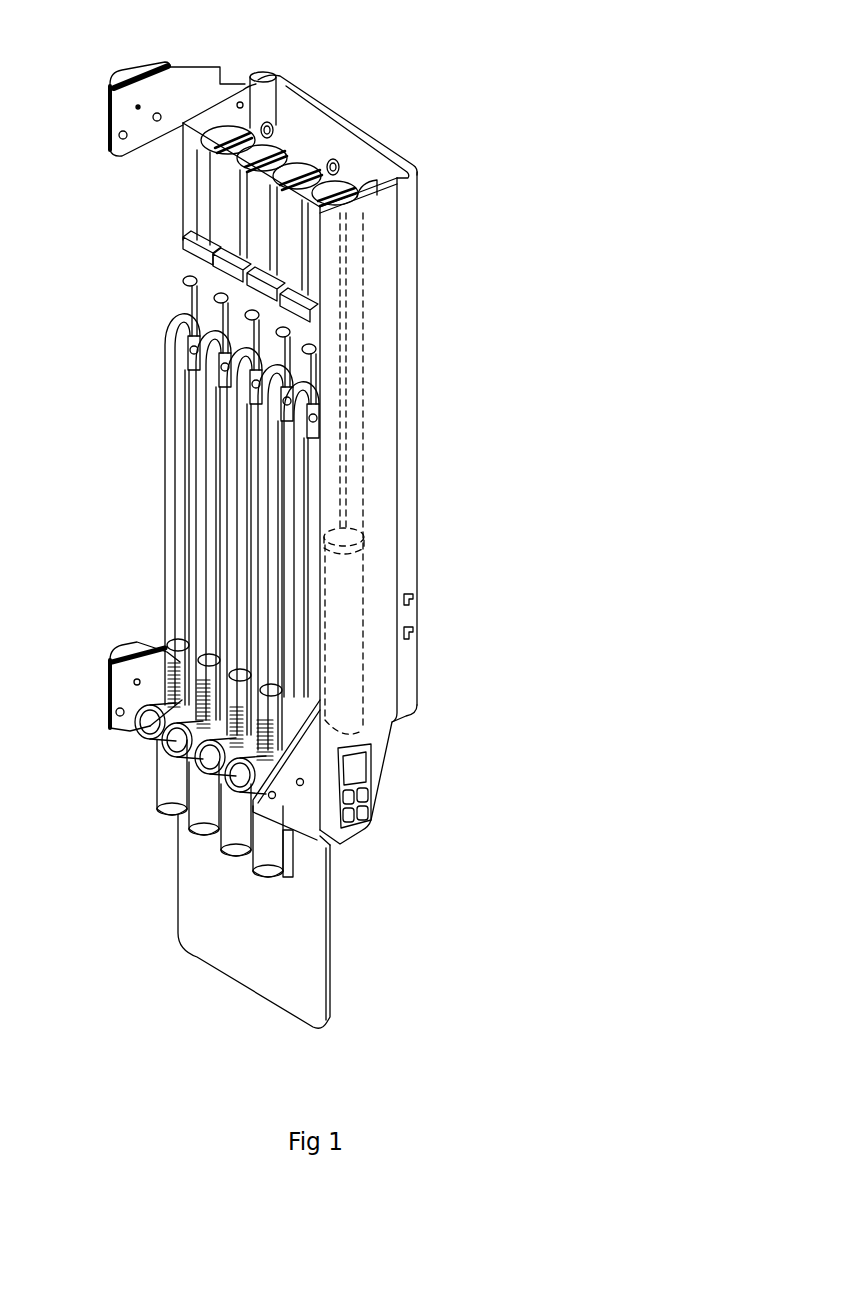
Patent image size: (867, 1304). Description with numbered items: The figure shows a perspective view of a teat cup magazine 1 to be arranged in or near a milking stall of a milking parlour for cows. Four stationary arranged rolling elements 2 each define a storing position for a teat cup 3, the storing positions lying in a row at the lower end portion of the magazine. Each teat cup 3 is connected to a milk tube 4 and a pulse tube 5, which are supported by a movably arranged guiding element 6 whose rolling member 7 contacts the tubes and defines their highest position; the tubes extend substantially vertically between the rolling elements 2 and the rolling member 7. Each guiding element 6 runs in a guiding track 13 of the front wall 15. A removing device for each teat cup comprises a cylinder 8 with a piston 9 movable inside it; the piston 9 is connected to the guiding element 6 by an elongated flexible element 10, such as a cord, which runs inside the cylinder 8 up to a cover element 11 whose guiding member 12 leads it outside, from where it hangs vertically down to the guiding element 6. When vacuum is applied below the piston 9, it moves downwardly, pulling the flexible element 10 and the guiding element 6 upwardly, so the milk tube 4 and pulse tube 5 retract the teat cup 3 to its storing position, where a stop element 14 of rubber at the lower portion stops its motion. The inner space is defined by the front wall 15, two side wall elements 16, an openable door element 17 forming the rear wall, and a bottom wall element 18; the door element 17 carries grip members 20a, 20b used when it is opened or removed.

The teat cup magazine 1 is at (442, 432).
The stationary arranged rolling element 2 is at (185, 750).
The teat cup 3 is at (203, 797).
The milk tube 4 is at (212, 452).
The pulse tube 5 is at (200, 506).
The guiding element 6 is at (187, 267).
The rolling member 7 is at (200, 352).
The cylinder 8 is at (362, 281).
The piston 9 is at (357, 531).
The elongated flexible element 10 is at (343, 346).
The cover element 11 is at (317, 173).
The guiding member 12 is at (300, 167).
The guiding track 13 is at (240, 207).
The stop element 14 is at (243, 910).
The front wall 15 is at (223, 223).
The side wall element 16 is at (384, 460).
The door element 17 is at (407, 228).
The bottom wall element 18 is at (407, 713).
The grip member 20a is at (413, 600).
The grip member 20b is at (413, 637).